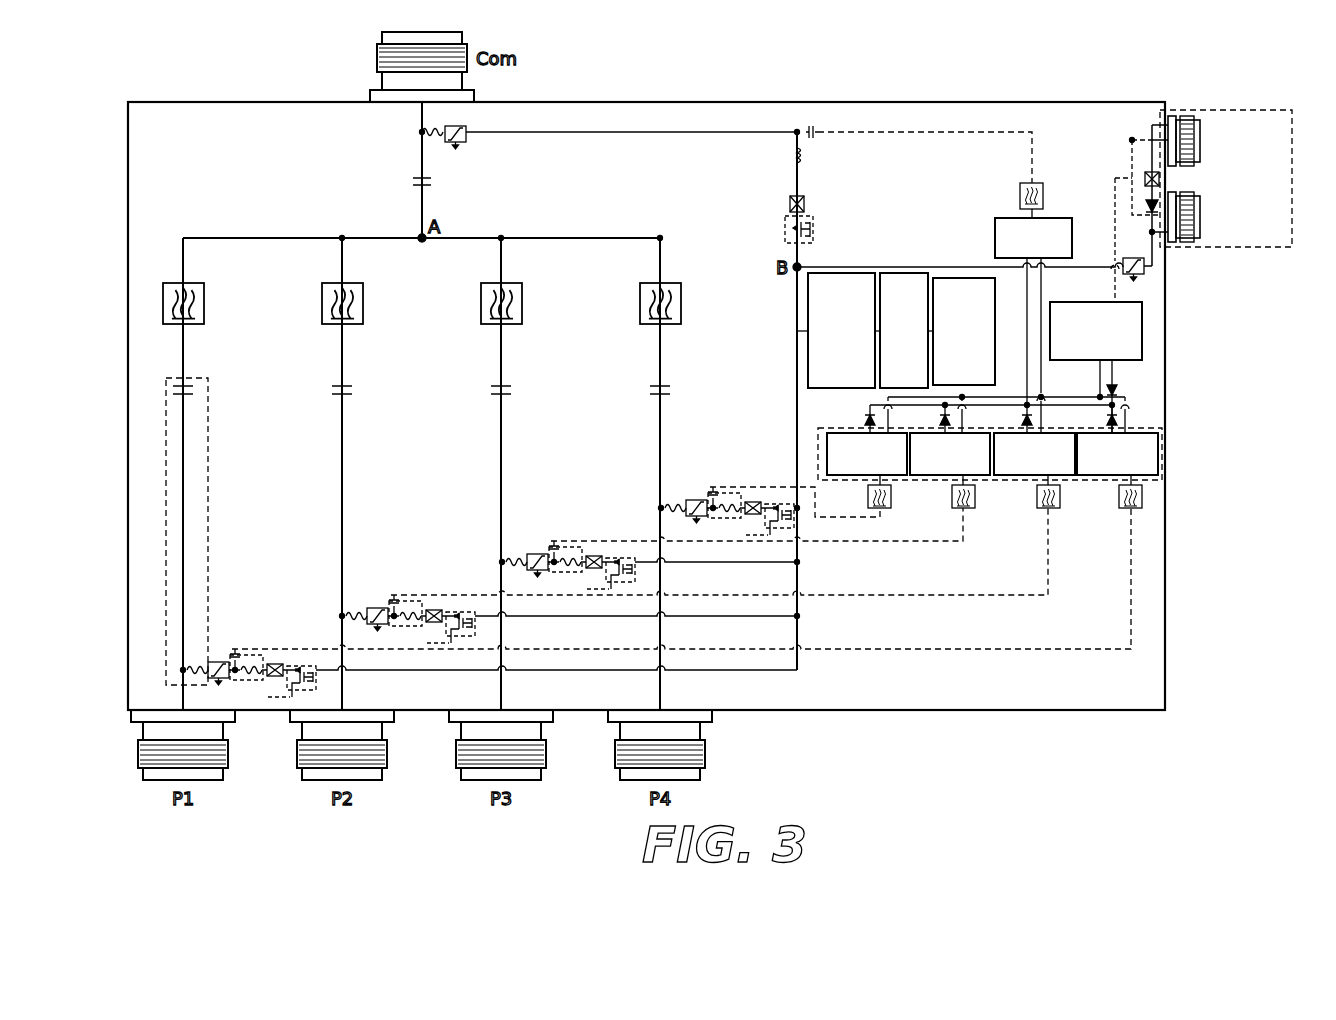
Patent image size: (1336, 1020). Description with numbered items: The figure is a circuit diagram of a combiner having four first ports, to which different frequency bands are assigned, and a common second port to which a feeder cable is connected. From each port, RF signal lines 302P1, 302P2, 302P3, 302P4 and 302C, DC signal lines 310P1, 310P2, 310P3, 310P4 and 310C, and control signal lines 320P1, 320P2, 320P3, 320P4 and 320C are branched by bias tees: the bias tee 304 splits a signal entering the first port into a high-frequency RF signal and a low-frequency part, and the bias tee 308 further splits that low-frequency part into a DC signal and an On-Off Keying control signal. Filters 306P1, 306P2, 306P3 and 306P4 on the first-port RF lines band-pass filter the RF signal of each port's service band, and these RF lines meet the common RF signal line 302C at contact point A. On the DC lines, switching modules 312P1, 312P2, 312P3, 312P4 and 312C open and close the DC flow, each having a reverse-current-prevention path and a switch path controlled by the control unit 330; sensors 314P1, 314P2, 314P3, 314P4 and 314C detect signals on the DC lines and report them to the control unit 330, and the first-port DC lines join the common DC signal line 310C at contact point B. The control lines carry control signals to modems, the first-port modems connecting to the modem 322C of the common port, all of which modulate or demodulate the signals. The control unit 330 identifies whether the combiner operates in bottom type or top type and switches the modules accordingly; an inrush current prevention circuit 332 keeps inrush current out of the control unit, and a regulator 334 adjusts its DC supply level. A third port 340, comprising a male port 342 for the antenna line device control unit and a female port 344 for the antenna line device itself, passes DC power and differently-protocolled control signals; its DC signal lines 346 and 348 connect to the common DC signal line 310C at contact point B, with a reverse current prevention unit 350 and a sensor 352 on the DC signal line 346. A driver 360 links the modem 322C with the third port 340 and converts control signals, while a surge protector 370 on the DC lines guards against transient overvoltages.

The RF signal line 302C is at (432, 168).
The RF signal line 302P1 is at (184, 360).
The RF signal line 302P2 is at (343, 360).
The RF signal line 302P3 is at (502, 360).
The RF signal line 302P4 is at (661, 360).
The bias tee 304 is at (208, 430).
The filter 306P1 is at (205, 298).
The filter 306P2 is at (364, 298).
The filter 306P3 is at (523, 298).
The filter 306P4 is at (682, 298).
The bias tee 308 is at (218, 660).
The DC signal line 310C is at (797, 172).
The DC signal line 310P1 is at (690, 672).
The DC signal line 310P2 is at (778, 618).
The DC signal line 310P3 is at (700, 564).
The DC signal line 310P4 is at (797, 512).
The switching module 312C is at (785, 234).
The switching module 312P1 is at (300, 665).
The switching module 312P2 is at (459, 611).
The switching module 312P3 is at (619, 557).
The switching module 312P4 is at (778, 503).
The sensor 314C is at (789, 204).
The sensor 314P1 is at (275, 663).
The sensor 314P2 is at (434, 609).
The sensor 314P3 is at (594, 555).
The sensor 314P4 is at (759, 471).
The control signal line 320C is at (905, 130).
The control signal line 320P1 is at (1045, 650).
The control signal line 320P2 is at (1015, 596).
The control signal line 320P3 is at (945, 542).
The control signal line 320P4 is at (878, 518).
The modem 322C is at (994, 238).
The control unit 330 is at (955, 277).
The inrush current prevention circuit 332 is at (806, 356).
The regulator 334 is at (898, 272).
The third port 340 is at (1193, 110).
The male port 342 is at (1198, 120).
The female port 344 is at (1190, 243).
The DC signal line 346 is at (1155, 124).
The DC signal line 348 is at (1154, 258).
The reverse current prevention unit 350 is at (1144, 206).
The sensor 352 is at (1144, 180).
The driver 360 is at (1142, 335).
The surge protector 370 is at (377, 606).